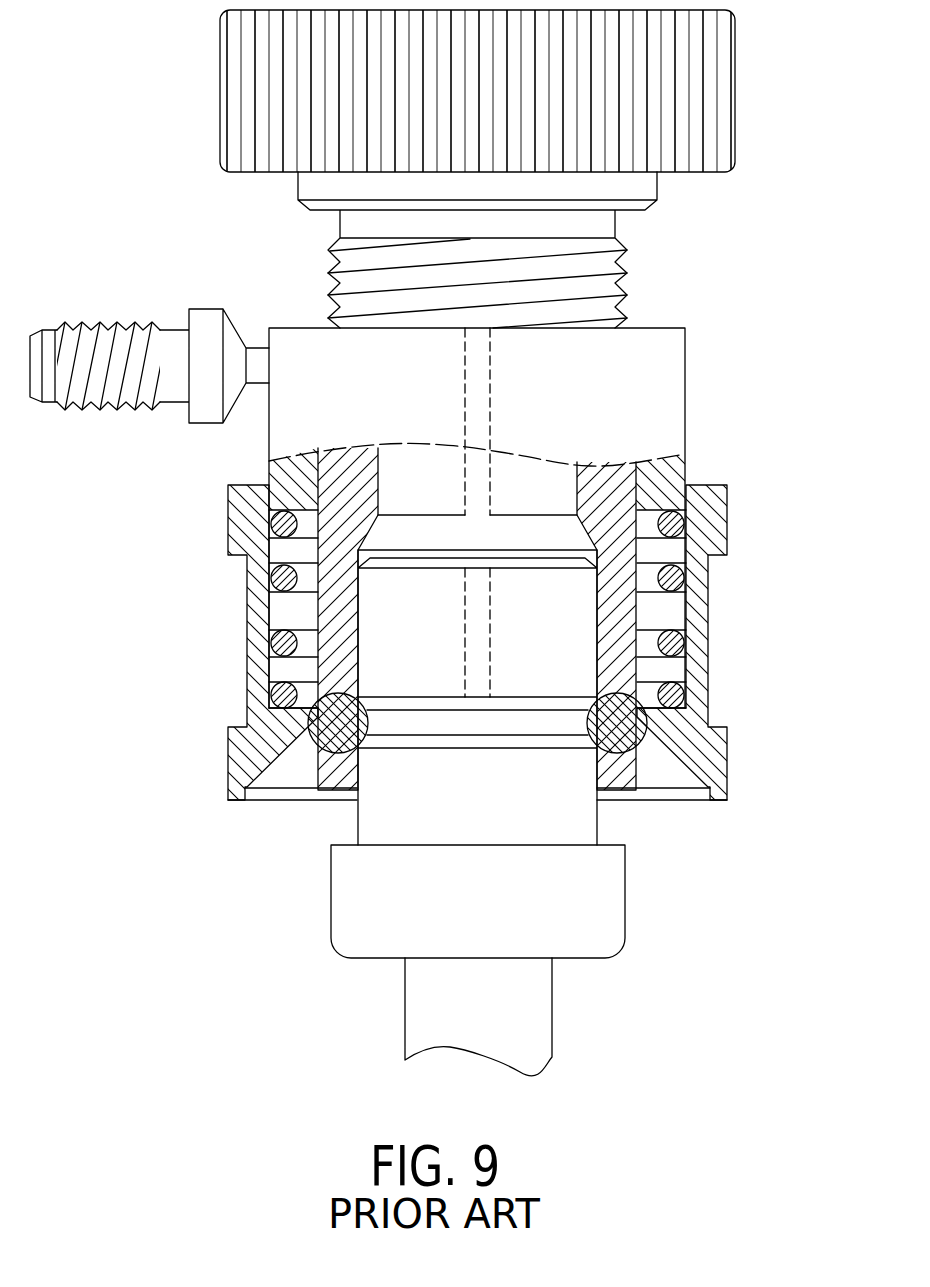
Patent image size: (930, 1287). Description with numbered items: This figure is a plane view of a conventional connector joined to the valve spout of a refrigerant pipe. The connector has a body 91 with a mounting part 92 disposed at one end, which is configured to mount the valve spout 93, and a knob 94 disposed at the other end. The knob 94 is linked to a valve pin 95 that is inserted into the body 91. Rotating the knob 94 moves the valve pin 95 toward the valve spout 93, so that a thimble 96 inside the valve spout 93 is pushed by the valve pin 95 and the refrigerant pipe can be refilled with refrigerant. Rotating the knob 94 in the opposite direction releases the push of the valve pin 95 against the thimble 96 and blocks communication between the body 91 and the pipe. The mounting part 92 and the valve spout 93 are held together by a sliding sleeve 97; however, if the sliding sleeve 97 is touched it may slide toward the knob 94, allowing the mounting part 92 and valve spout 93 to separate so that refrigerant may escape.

The body 91 is at (657, 383).
The mounting part 92 is at (627, 767).
The valve spout 93 is at (555, 620).
The knob 94 is at (735, 88).
The valve pin 95 is at (480, 488).
The thimble 96 is at (468, 632).
The sliding sleeve 97 is at (258, 708).